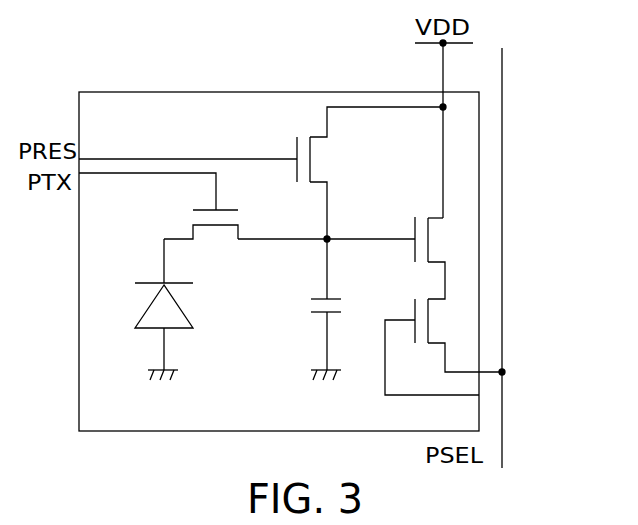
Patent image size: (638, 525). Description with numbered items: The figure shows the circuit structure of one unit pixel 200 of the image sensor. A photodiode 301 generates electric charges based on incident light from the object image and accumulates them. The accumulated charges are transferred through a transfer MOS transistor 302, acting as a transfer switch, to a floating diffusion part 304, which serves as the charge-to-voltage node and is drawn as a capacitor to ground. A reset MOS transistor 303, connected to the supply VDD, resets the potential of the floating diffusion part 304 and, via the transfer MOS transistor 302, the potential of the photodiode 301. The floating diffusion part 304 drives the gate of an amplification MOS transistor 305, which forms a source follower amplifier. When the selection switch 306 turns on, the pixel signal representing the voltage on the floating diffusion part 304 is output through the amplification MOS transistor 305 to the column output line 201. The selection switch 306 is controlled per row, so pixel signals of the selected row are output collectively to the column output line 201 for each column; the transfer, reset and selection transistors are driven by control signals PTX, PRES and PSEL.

The unit pixel 200 is at (173, 92).
The column output line 201 is at (502, 156).
The photodiode 301 is at (145, 333).
The transfer MOS transistor 302 is at (194, 217).
The reset MOS transistor 303 is at (325, 161).
The floating diffusion part 304 is at (315, 323).
The amplification MOS transistor 305 is at (406, 252).
The selection switch 306 is at (436, 346).